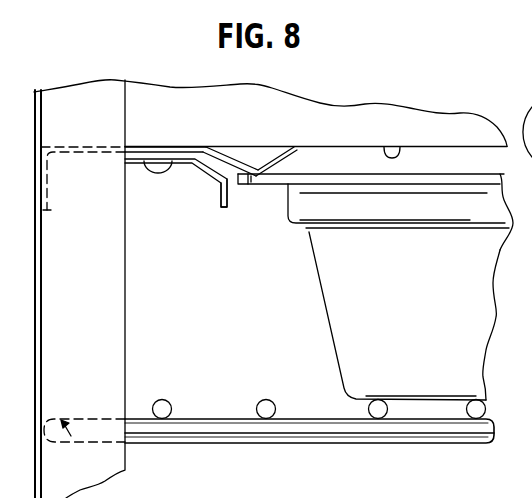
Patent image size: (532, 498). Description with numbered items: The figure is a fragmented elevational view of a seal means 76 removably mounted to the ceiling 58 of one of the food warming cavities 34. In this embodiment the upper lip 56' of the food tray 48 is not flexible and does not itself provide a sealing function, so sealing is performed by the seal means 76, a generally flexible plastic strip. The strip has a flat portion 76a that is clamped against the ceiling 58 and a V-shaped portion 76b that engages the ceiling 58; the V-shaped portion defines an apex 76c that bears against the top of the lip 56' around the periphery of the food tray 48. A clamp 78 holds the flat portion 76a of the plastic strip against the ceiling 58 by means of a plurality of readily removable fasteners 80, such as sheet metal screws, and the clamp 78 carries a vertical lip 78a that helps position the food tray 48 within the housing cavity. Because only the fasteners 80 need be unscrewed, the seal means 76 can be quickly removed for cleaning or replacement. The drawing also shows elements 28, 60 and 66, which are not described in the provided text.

The side wall 28 is at (117, 325).
The cavity 34 is at (277, 340).
The food tray 48 is at (318, 290).
The upper lip 56' is at (371, 214).
The ceiling 58 is at (397, 153).
The rollers 60 is at (309, 418).
The guide rollers 66 is at (378, 405).
The seal means 76 is at (267, 114).
The flat portion 76a is at (182, 147).
The V-shaped portion 76b is at (299, 164).
The apex 76c is at (258, 173).
The clamp 78 is at (177, 205).
The vertical lip 78a is at (222, 195).
The fasteners 80 is at (167, 168).